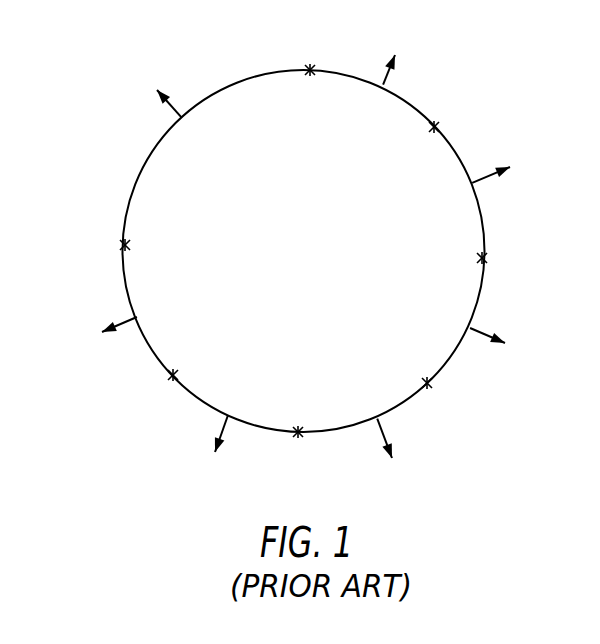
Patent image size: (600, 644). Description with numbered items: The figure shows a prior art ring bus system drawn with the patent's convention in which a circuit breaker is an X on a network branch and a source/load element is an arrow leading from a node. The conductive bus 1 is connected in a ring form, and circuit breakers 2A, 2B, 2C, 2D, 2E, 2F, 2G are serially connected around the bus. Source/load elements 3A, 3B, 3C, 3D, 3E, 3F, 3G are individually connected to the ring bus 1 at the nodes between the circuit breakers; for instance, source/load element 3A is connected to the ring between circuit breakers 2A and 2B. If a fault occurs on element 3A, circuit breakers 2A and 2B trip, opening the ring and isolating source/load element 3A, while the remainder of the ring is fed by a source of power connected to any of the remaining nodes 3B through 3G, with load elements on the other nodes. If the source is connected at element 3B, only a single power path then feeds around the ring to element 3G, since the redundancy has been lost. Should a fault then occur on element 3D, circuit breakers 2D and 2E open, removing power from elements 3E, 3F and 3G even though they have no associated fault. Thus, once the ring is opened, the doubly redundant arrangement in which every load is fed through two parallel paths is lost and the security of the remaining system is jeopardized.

The conductive bus 1 is at (147, 160).
The circuit breaker 2A is at (310, 66).
The circuit breaker 2B is at (440, 126).
The circuit breaker 2C is at (488, 259).
The circuit breaker 2D is at (432, 386).
The circuit breaker 2E is at (298, 438).
The circuit breaker 2F is at (168, 378).
The circuit breaker 2G is at (120, 244).
The source/load element 3A is at (389, 74).
The source/load element 3B is at (478, 186).
The source/load element 3C is at (481, 326).
The source/load element 3D is at (386, 431).
The source/load element 3E is at (211, 431).
The source/load element 3F is at (125, 316).
The source/load element 3G is at (176, 107).